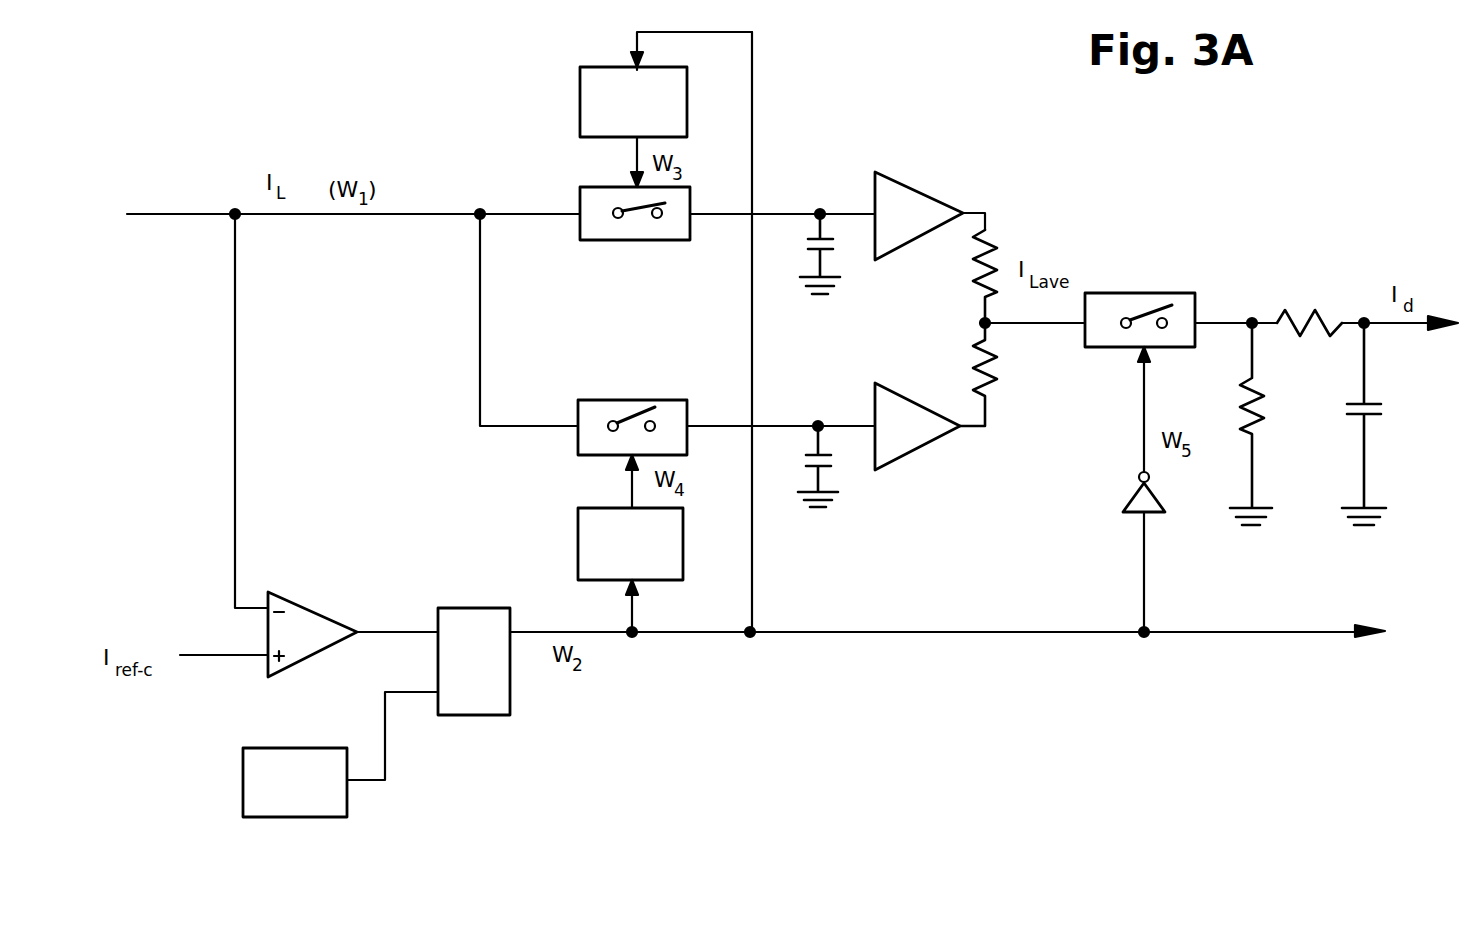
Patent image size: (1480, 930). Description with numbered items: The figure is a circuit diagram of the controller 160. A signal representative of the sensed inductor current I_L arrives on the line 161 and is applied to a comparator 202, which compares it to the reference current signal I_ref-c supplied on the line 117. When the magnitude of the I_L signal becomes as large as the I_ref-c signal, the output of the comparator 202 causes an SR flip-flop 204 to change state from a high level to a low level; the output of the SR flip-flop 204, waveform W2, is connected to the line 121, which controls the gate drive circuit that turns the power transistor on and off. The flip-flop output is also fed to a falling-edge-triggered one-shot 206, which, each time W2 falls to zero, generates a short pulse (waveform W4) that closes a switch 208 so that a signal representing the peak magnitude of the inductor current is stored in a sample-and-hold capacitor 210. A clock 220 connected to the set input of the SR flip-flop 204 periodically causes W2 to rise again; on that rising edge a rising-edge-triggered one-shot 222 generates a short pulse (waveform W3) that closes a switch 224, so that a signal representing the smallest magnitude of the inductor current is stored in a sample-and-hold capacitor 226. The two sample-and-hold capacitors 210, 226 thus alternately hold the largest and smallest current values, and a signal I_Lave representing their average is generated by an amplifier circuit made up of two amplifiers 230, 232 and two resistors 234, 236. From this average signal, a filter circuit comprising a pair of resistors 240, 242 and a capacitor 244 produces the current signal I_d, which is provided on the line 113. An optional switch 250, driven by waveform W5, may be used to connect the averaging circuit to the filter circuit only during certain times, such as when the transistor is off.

The line 161 is at (182, 214).
The rising-edge-triggered one-shot 222 is at (580, 98).
The switch 224 is at (606, 241).
The sample-and-hold capacitor 226 is at (812, 252).
The amplifier 230 is at (915, 185).
The resistor 234 is at (1000, 243).
The resistor 236 is at (995, 372).
The amplifier 232 is at (928, 445).
The sample-and-hold capacitor 210 is at (833, 468).
The switch 208 is at (620, 400).
The falling-edge-triggered one-shot 206 is at (578, 536).
The SR flip-flop 204 is at (458, 608).
The comparator 202 is at (312, 600).
The line 117 is at (218, 657).
The clock 220 is at (273, 818).
The line 121 is at (1253, 632).
The controller 160 is at (1269, 342).
The optional switch 250 is at (1155, 293).
The resistor 242 is at (1305, 310).
The resistor 240 is at (1258, 430).
The capacitor 244 is at (1382, 415).
The line 113 is at (1412, 325).